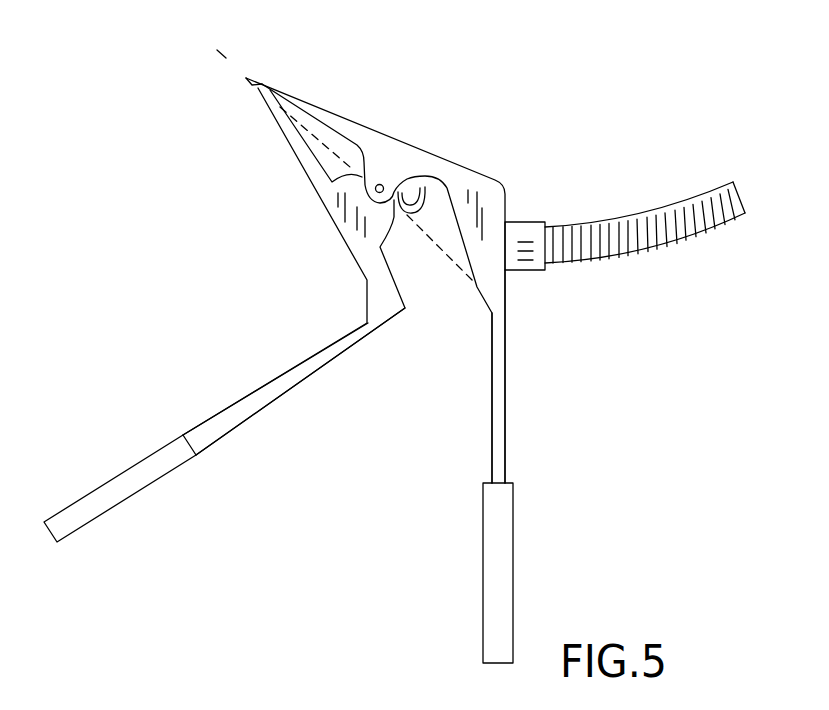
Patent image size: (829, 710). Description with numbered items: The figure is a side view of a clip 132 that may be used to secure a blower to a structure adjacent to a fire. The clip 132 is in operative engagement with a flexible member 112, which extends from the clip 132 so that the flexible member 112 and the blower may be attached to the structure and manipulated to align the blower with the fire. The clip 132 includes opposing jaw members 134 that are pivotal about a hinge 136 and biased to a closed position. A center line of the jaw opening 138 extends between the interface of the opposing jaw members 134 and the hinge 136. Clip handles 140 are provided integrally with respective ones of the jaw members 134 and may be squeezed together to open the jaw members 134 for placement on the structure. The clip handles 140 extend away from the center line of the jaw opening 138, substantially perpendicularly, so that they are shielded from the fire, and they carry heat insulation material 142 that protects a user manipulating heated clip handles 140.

The flexible member 112 is at (600, 225).
The clip 132 is at (394, 347).
The opposing jaw members 134 is at (328, 110).
The hinge 136 is at (385, 186).
The center line of the jaw opening 138 is at (232, 67).
The clip handles 140 is at (243, 410).
The heat insulation material 142 is at (122, 488).